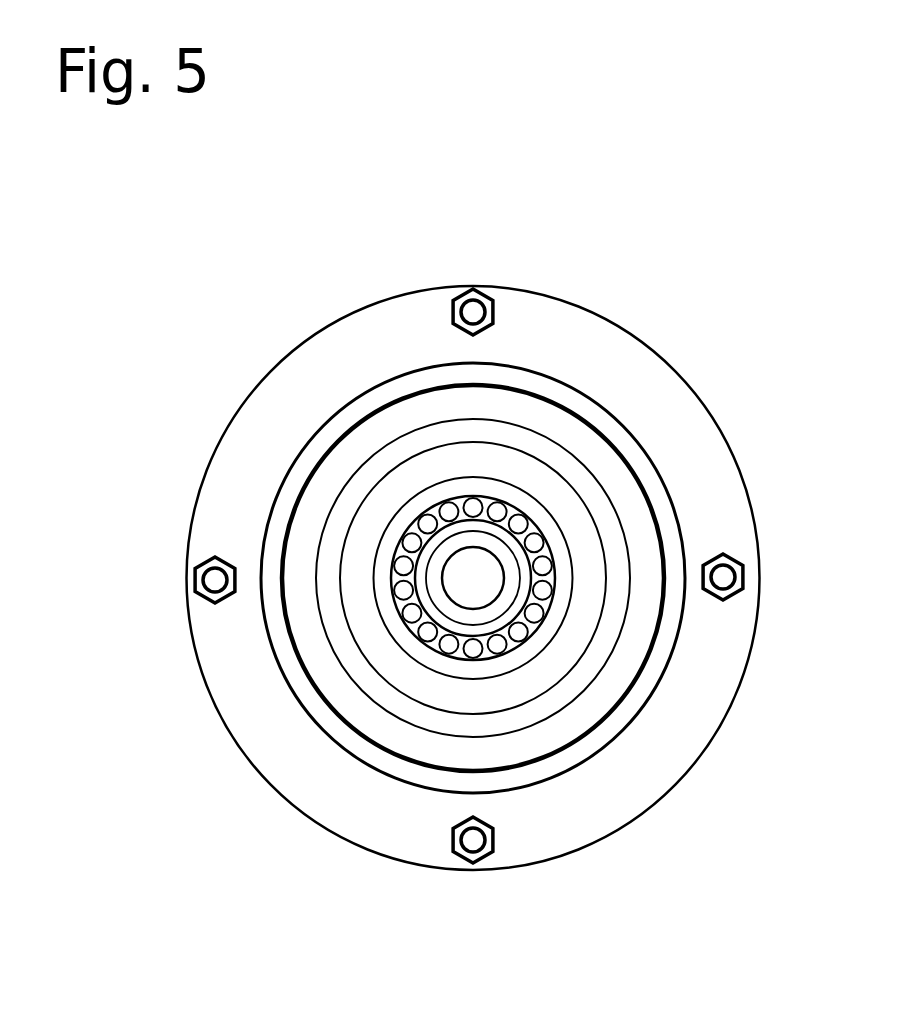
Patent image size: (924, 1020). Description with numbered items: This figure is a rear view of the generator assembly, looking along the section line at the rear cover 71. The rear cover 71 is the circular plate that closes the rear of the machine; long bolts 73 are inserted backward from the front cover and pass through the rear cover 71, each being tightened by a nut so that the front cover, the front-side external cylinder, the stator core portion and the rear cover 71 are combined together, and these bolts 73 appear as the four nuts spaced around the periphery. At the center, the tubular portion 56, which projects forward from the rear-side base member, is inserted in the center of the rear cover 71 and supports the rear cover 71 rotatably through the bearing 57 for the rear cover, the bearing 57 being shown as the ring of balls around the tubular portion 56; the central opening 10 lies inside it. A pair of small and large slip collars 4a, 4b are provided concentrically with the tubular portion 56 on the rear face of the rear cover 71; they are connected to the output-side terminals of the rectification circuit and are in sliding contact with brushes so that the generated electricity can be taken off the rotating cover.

The small slip collar 4a is at (580, 407).
The large slip collar 4b is at (583, 485).
The shaft bore 10 is at (458, 597).
The tubular portion 56 is at (462, 638).
The bearing 57 is at (547, 615).
The rear cover 71 is at (380, 508).
The long bolt 73 is at (737, 562).